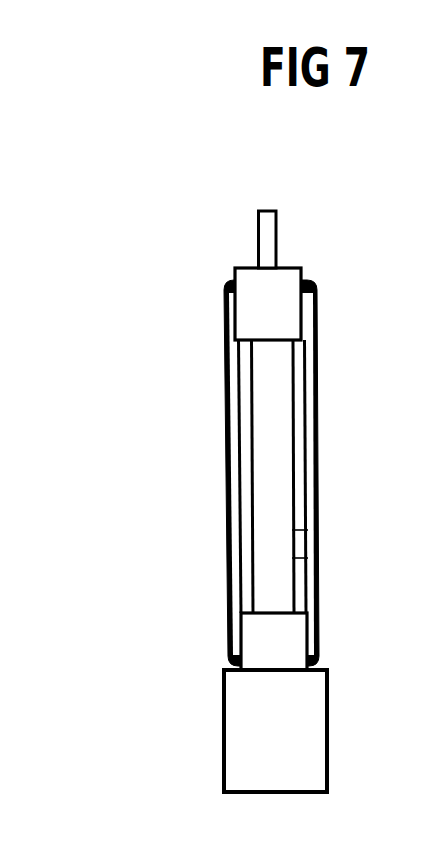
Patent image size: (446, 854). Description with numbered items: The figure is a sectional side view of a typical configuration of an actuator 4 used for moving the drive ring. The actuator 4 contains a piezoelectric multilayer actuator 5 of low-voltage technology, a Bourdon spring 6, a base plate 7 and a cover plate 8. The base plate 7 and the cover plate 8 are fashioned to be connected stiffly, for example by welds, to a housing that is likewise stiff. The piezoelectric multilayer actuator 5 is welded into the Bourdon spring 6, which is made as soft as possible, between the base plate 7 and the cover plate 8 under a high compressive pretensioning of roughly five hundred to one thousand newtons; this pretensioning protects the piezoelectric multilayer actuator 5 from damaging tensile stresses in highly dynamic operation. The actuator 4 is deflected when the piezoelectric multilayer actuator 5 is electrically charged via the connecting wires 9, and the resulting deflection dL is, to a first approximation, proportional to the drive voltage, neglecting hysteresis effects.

The actuator 4 is at (180, 479).
The piezoelectric multilayer actuator 5 is at (287, 428).
The Bourdon spring 6 is at (313, 373).
The base plate 7 is at (313, 708).
The cover plate 8 is at (290, 280).
The connecting wires 9 is at (308, 530).
The deflection dL is at (199, 120).